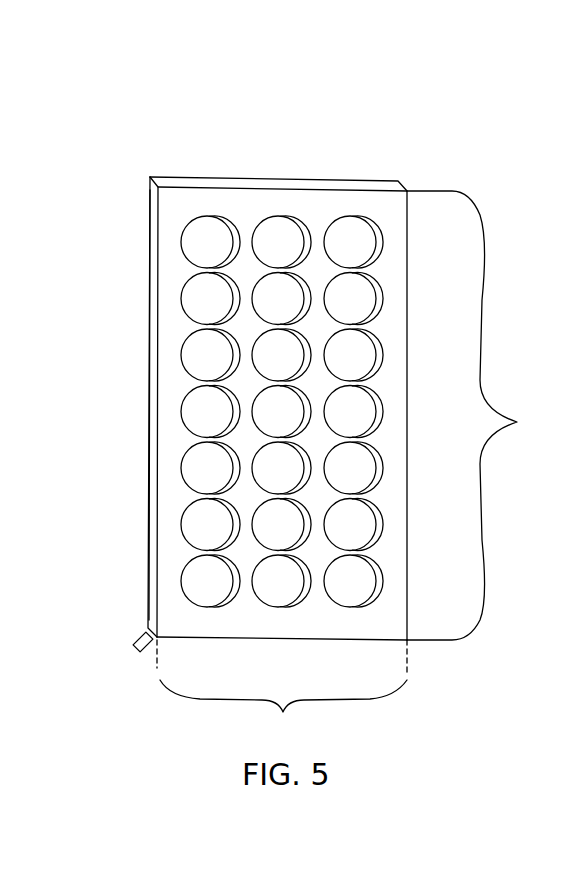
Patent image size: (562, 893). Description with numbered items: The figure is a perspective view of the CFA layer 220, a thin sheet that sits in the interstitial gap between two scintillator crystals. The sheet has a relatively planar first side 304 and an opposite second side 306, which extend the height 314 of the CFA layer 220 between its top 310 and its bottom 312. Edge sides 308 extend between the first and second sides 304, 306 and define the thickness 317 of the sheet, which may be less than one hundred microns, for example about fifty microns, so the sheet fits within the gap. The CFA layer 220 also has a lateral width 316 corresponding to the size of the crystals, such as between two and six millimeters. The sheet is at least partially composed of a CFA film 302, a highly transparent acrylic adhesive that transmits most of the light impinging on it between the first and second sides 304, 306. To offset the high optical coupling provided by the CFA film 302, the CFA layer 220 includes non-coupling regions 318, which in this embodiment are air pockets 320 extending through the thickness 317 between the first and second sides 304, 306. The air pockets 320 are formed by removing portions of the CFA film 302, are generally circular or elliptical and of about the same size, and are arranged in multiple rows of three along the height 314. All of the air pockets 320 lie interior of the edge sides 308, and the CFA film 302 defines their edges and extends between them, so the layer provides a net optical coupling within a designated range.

The CFA layer 220 is at (428, 106).
The CFA film 302 is at (150, 223).
The first side 304 is at (172, 192).
The second side 306 is at (150, 295).
The edge sides 308 is at (255, 183).
The top 310 is at (347, 190).
The bottom 312 is at (283, 643).
The height 314 is at (481, 415).
The lateral width 316 is at (283, 712).
The thickness 317 is at (128, 645).
The non-coupling region 318 is at (352, 245).
The air pockets 320 is at (358, 255).